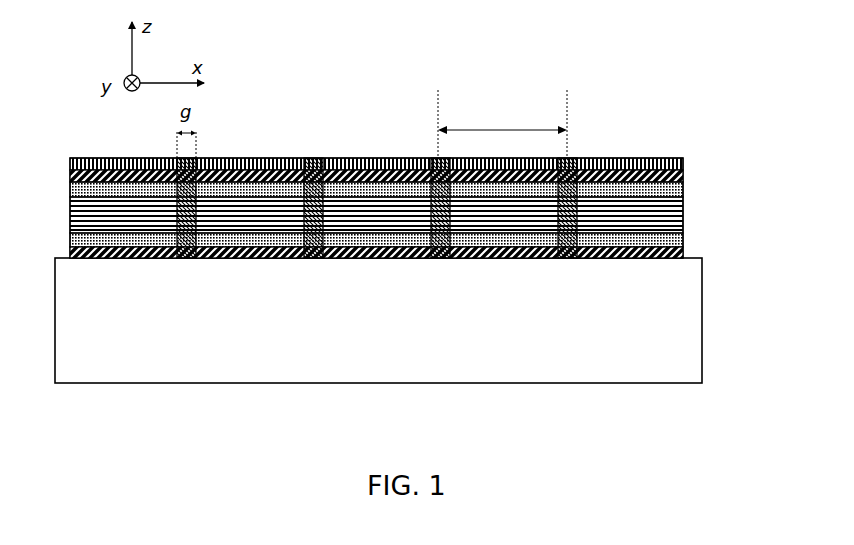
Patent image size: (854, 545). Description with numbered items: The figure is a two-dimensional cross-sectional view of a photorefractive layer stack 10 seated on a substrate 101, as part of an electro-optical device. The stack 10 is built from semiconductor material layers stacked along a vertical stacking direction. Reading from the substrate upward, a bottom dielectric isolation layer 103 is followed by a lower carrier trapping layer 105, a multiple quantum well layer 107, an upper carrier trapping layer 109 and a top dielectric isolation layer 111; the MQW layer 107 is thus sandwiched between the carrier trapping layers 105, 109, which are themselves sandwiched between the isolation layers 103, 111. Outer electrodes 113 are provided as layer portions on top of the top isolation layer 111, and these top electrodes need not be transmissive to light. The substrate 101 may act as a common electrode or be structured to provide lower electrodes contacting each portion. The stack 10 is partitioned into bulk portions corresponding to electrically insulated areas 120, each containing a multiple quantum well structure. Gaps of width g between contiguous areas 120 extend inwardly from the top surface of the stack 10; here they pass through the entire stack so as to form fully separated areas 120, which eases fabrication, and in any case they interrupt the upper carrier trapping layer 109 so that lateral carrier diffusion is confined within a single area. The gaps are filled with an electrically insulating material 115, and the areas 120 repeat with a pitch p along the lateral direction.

The photorefractive layer stack 10 is at (662, 415).
The substrate 101 is at (508, 383).
The dielectric isolation layer 103 is at (684, 252).
The carrier trapping layer 105 is at (684, 239).
The multiple quantum well layer 107 is at (70, 226).
The carrier trapping layer 109 is at (684, 190).
The dielectric isolation layer 111 is at (684, 175).
The outer electrode 113 is at (399, 179).
The electrically insulating material 115 is at (315, 158).
The electrically insulated area 120 is at (567, 100).